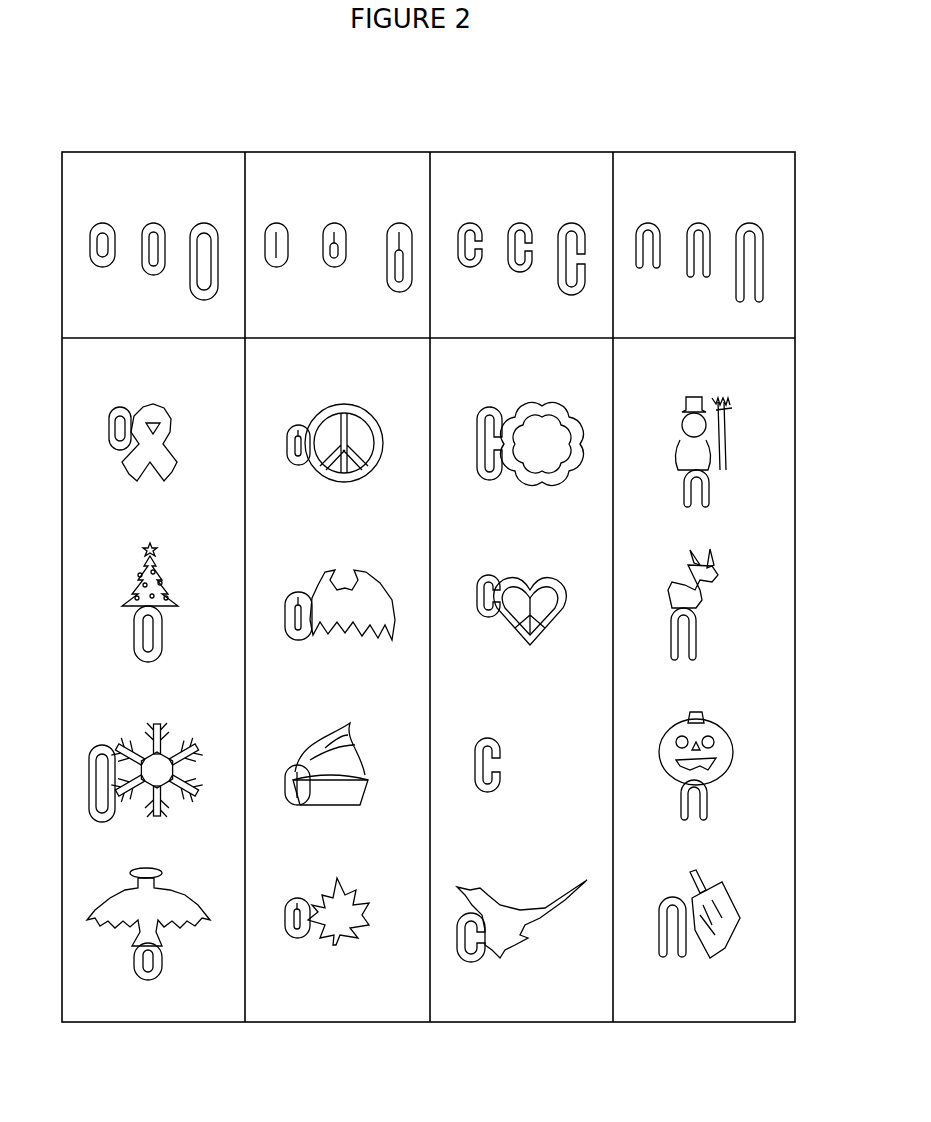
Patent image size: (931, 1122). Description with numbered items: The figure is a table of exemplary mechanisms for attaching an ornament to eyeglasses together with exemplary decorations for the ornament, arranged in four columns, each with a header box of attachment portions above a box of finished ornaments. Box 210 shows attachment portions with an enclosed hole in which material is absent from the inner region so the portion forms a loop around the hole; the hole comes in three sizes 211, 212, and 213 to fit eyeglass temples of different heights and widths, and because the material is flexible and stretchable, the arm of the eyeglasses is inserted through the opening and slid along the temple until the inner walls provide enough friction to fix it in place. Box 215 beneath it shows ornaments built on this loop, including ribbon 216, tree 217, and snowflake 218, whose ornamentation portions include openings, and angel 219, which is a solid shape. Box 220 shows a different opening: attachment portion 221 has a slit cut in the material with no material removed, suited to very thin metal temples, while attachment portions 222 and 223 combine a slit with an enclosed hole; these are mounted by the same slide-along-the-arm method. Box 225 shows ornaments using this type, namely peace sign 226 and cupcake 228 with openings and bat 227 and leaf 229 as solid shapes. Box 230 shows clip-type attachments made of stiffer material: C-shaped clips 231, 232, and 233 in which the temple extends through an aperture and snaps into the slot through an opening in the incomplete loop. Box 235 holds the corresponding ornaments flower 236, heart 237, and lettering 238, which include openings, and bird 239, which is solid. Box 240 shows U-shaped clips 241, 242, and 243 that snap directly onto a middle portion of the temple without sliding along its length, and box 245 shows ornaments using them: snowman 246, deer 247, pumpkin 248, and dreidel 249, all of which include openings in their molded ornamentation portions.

The box 210 is at (98, 160).
The enclosed hole attachment portion 211 is at (87, 235).
The enclosed hole attachment portion 212 is at (150, 217).
The enclosed hole attachment portion 213 is at (188, 225).
The box 215 is at (98, 998).
The ornament 216 is at (125, 402).
The ornament 217 is at (125, 560).
The ornament 218 is at (125, 727).
The ornament 219 is at (125, 877).
The box 220 is at (282, 160).
The attachment portion 221 is at (270, 235).
The attachment portion 222 is at (333, 217).
The attachment portion 223 is at (371, 225).
The box 225 is at (282, 998).
The ornament 226 is at (308, 402).
The ornament 227 is at (308, 560).
The ornament 228 is at (308, 727).
The ornament 229 is at (308, 877).
The box 230 is at (466, 160).
The attachment portion 231 is at (455, 235).
The attachment portion 232 is at (518, 217).
The attachment portion 233 is at (556, 225).
The box 235 is at (466, 998).
The ornament 236 is at (493, 402).
The ornament 237 is at (493, 560).
The ornament 238 is at (493, 727).
The ornament 239 is at (493, 877).
The box 240 is at (650, 160).
The attachment portion 241 is at (639, 235).
The attachment portion 242 is at (702, 217).
The attachment portion 243 is at (740, 225).
The box 245 is at (650, 998).
The ornament 246 is at (677, 402).
The ornament 247 is at (677, 560).
The ornament 248 is at (677, 727).
The ornament 249 is at (677, 877).